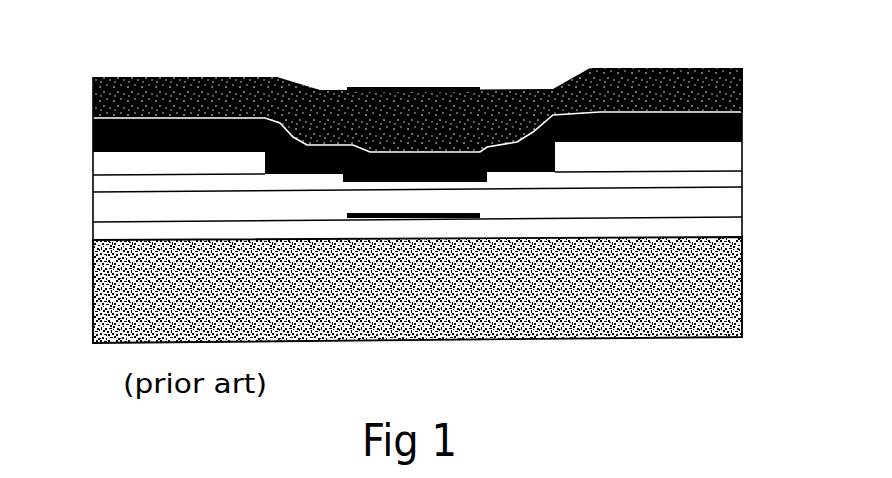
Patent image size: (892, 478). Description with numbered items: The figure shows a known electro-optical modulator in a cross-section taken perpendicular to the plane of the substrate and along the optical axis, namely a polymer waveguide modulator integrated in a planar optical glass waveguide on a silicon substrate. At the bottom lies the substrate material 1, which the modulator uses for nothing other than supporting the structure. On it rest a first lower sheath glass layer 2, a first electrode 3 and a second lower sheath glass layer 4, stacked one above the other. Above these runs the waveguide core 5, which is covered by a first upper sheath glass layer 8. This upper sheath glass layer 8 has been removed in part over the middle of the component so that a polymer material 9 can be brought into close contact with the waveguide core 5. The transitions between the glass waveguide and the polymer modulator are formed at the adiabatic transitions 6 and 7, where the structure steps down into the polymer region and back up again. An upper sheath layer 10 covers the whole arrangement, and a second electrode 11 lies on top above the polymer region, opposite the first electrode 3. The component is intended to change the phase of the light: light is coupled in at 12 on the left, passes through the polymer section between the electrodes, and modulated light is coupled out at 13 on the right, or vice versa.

The substrate material 1 is at (283, 277).
The first lower sheath glass layer 2 is at (338, 230).
The first electrode 3 is at (415, 218).
The second lower sheath glass layer 4 is at (680, 202).
The waveguide core 5 is at (443, 148).
The adiabatic transition 6 is at (299, 135).
The adiabatic transition 7 is at (600, 97).
The first upper sheath glass layer 8 is at (690, 156).
The polymer material 9 is at (667, 110).
The upper sheath layer 10 is at (286, 77).
The second electrode 11 is at (383, 88).
The light input 12 is at (68, 187).
The light output 13 is at (797, 180).